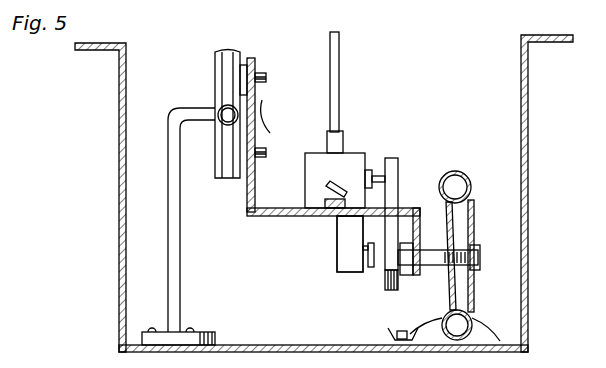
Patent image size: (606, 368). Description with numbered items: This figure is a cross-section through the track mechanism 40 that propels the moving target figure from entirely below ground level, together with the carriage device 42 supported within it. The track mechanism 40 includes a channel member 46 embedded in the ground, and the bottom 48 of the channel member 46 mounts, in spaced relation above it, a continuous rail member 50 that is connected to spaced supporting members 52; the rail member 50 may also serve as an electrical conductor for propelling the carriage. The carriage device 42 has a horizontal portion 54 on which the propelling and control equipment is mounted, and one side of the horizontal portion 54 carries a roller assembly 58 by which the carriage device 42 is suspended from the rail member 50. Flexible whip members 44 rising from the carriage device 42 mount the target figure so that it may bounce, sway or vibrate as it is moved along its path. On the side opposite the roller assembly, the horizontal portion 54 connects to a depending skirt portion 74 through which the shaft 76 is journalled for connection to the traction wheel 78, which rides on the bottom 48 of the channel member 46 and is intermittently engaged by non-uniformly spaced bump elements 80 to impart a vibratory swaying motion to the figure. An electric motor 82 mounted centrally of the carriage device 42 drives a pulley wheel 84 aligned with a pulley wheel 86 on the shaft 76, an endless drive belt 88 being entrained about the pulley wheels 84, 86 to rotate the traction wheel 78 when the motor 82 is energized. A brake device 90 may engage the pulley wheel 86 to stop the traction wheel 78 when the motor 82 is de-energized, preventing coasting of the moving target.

The track mechanism 40 is at (296, 193).
The carriage device 42 is at (283, 219).
The flexible whip members 44 is at (338, 97).
The channel member 46 is at (528, 246).
The bottom of the channel member 48 is at (337, 344).
The rail member 50 is at (220, 108).
The supporting members 52 is at (178, 268).
The horizontal portion 54 is at (333, 244).
The roller assembly 58 is at (263, 118).
The depending skirt portion 74 is at (422, 222).
The shaft 76 is at (438, 265).
The traction wheel 78 is at (467, 180).
The bump elements 80 is at (476, 331).
The electric motor 82 is at (362, 162).
The pulley wheel 84 is at (396, 158).
The pulley wheel 86 is at (385, 281).
The endless drive belt 88 is at (398, 185).
The brake device 90 is at (348, 268).